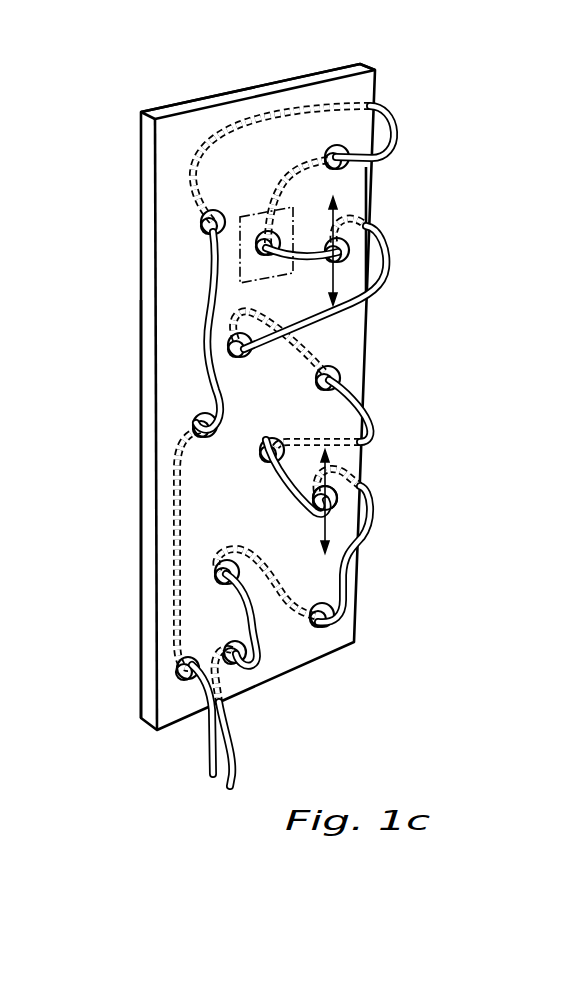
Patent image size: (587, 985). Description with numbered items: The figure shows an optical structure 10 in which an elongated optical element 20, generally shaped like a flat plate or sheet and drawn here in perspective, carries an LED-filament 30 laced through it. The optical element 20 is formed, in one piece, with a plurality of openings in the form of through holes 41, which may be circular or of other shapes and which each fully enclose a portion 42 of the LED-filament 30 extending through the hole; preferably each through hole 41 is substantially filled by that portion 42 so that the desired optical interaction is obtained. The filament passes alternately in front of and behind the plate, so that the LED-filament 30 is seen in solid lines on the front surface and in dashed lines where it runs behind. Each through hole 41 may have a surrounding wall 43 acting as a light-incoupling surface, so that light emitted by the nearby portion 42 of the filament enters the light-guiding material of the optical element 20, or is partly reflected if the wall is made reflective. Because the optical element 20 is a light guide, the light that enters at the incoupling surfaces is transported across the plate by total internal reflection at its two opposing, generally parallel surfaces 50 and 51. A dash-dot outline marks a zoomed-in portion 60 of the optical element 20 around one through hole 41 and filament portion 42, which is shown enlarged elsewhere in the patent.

The optical structure 10 is at (187, 62).
The elongated optical element 20 is at (147, 700).
The LED-filament 30 is at (395, 147).
The through holes 41 is at (196, 418).
The portion of the LED-filament 42 is at (335, 498).
The surrounding wall 43 is at (337, 357).
The surface of the light guide 50 is at (147, 530).
The surface of the light guide 51 is at (360, 190).
The zoomed-in portion 60 is at (280, 200).